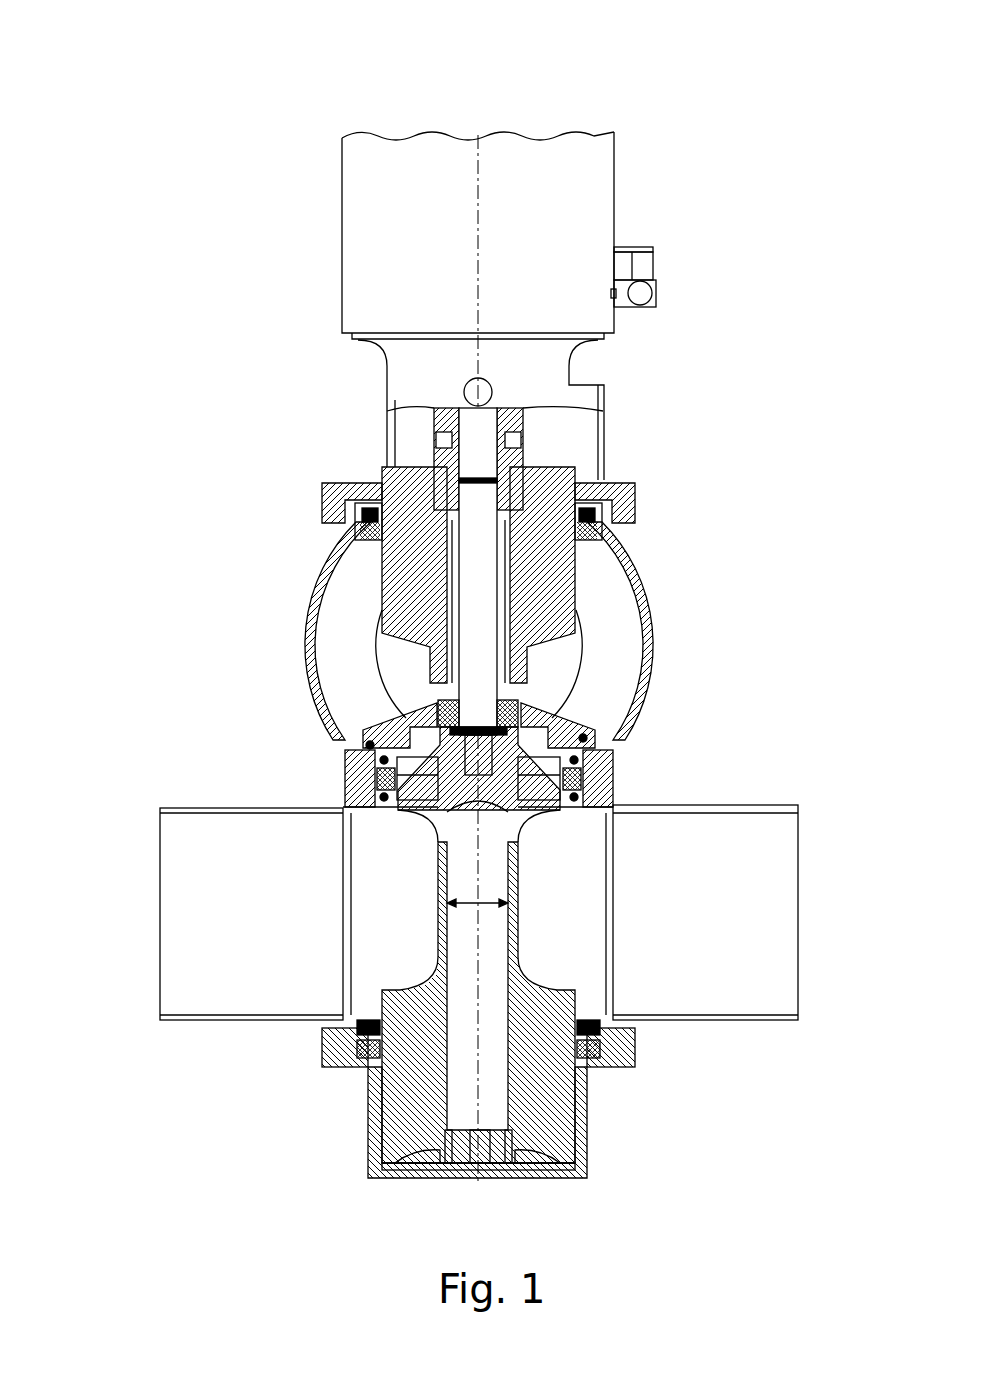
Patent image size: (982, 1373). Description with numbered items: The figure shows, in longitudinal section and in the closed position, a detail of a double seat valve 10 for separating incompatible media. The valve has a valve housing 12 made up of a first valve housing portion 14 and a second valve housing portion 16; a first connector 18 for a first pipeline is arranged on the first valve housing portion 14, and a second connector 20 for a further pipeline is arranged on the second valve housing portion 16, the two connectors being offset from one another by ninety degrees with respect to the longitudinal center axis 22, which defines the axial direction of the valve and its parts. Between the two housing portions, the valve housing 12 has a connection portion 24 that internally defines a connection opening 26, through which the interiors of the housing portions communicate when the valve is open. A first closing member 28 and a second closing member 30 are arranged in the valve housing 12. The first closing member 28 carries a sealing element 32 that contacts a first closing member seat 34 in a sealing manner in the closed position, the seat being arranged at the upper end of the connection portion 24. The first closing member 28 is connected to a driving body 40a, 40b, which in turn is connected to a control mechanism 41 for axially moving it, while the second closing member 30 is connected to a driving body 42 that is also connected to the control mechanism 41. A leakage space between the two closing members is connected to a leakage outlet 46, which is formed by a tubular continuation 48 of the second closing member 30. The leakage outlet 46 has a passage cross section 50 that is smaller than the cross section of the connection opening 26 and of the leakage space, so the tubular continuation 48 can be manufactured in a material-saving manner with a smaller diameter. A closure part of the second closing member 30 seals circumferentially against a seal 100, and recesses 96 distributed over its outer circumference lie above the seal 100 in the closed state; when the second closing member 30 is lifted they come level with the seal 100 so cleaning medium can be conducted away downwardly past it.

The double seat valve 10 is at (778, 142).
The valve housing 12 is at (710, 615).
The first valve housing portion 14 is at (650, 663).
The second valve housing portion 16 is at (348, 964).
The first connector 18 is at (393, 660).
The second connector 20 is at (195, 810).
The longitudinal center axis 22 is at (477, 260).
The connection portion 24 is at (598, 772).
The connection opening 26 is at (343, 807).
The first closing member 28 is at (383, 718).
The second closing member 30 is at (533, 820).
The sealing element 32 is at (370, 745).
The first closing member seat 34 is at (583, 738).
The driving body 40a is at (397, 558).
The driving body 40b is at (432, 410).
The control mechanism 41 is at (367, 192).
The driving body 42 is at (485, 445).
The leakage outlet 46 is at (470, 1108).
The tubular continuation 48 is at (440, 876).
The passage cross section 50 is at (493, 904).
The recesses 96 is at (447, 808).
The seal 100 is at (583, 1028).